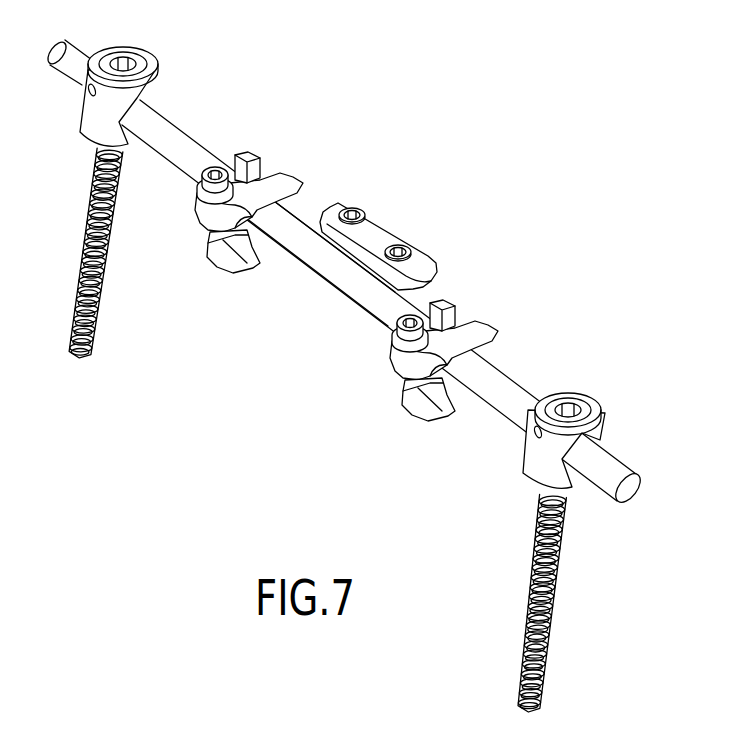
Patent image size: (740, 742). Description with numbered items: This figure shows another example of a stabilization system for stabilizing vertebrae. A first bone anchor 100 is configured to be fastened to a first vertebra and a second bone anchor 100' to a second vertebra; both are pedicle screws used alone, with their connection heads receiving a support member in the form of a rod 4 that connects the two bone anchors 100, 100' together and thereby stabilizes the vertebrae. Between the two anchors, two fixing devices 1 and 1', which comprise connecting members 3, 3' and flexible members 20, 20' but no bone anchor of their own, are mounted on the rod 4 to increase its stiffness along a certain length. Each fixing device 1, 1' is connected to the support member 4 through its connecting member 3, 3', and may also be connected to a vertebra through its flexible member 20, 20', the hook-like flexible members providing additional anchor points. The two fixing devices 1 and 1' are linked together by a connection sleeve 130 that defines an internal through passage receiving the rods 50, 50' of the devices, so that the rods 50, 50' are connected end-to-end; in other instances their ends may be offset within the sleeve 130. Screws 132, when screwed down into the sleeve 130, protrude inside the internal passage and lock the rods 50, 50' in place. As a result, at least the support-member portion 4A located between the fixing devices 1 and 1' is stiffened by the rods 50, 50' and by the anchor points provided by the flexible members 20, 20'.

The fixing device 1 is at (249, 161).
The fixing device 1' is at (445, 313).
The connecting member 3 is at (275, 159).
The connecting member 3' is at (474, 308).
The rod 4 is at (505, 377).
The support-member portion 4A is at (348, 285).
The flexible member 20 is at (222, 256).
The flexible member 20' is at (419, 410).
The rod 50 is at (271, 180).
The rod 50' is at (434, 297).
The first bone anchor 100 is at (139, 183).
The second bone anchor 100' is at (583, 528).
The connection sleeve 130 is at (378, 232).
The screws 132 is at (356, 206).